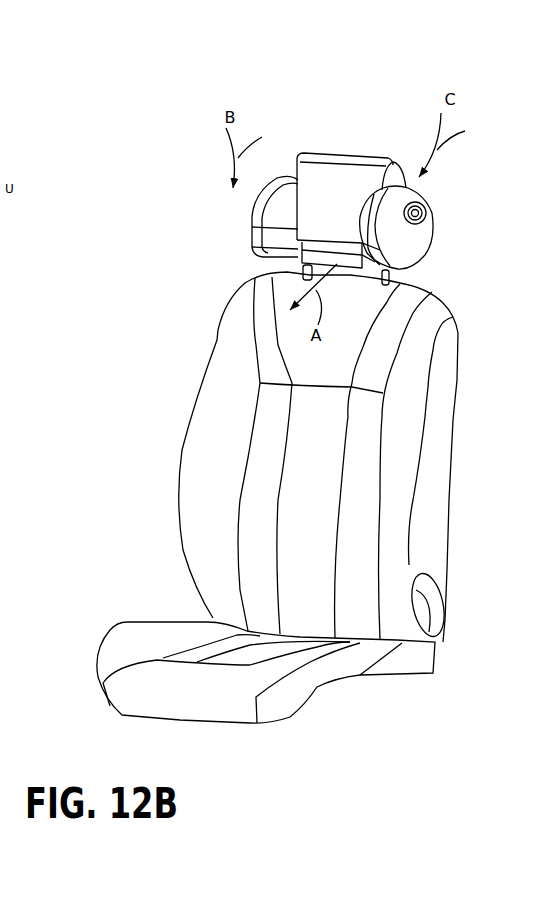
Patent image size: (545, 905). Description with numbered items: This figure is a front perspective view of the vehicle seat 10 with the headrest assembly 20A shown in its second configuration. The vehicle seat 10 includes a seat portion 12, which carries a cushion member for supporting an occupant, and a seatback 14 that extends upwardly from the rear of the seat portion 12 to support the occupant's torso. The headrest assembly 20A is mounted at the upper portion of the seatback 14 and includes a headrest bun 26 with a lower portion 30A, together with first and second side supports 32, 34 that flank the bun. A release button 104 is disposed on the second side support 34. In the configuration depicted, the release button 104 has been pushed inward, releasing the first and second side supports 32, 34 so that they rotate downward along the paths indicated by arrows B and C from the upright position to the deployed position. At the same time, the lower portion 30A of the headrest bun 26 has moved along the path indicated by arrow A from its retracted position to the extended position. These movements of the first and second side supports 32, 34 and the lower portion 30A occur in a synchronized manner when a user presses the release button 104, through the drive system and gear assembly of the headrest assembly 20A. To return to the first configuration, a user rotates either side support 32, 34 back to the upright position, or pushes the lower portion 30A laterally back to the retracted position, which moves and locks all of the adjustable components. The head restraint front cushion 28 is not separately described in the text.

The vehicle seat 10 is at (178, 423).
The seat portion 12 is at (122, 616).
The seatback 14 is at (458, 487).
The headrest assembly 20A is at (293, 143).
The headrest bun 26 is at (327, 157).
The head restraint front cushion 28 is at (363, 177).
The lower portion of the headrest bun 30A is at (250, 272).
The first side support 32 is at (252, 226).
The second side support 34 is at (400, 245).
The release button 104 is at (428, 216).